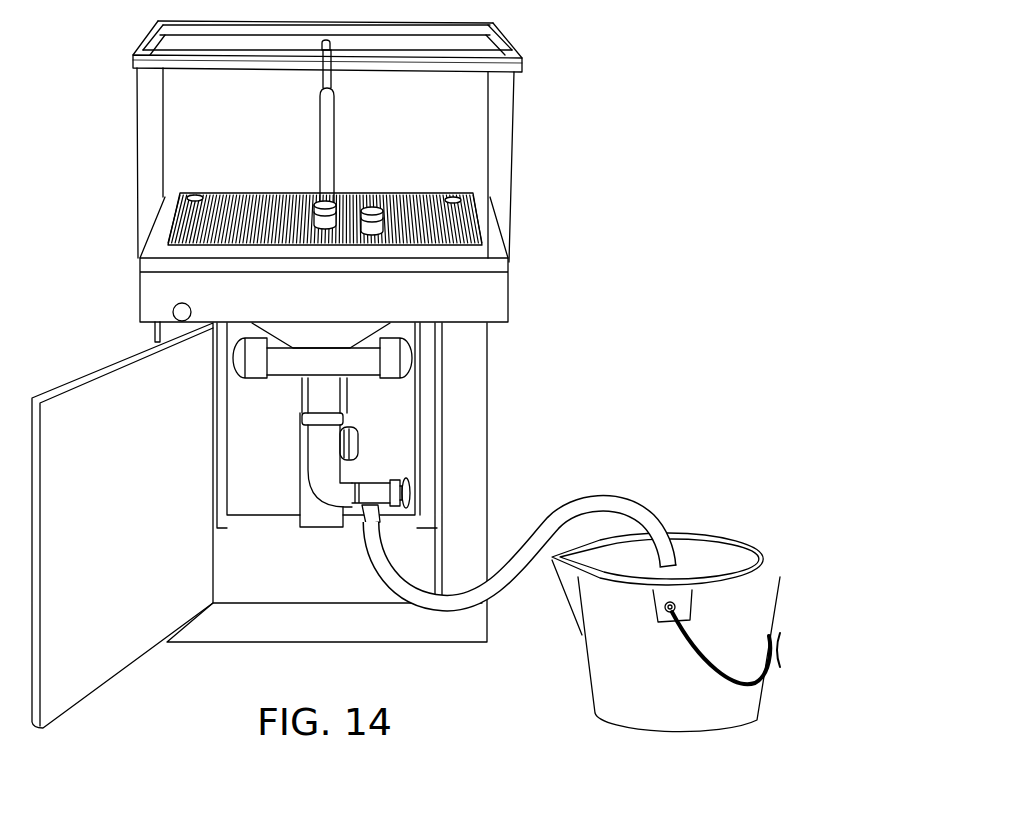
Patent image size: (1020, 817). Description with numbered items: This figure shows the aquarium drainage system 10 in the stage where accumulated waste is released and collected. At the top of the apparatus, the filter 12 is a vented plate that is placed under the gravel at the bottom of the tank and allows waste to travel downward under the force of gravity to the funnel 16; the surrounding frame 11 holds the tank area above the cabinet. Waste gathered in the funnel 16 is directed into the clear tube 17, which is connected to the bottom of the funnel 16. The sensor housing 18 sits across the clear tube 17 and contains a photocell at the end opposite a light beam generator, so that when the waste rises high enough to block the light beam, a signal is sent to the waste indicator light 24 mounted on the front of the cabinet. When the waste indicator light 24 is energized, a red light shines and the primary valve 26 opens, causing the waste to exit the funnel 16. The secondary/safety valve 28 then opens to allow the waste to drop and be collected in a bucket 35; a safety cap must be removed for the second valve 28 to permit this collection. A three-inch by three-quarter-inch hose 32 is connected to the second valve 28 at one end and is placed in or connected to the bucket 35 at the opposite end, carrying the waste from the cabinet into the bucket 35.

The aquarium drainage system 10 is at (584, 77).
The frame 11 is at (512, 132).
The filter 12 is at (478, 222).
The funnel 16 is at (392, 328).
The clear tube 17 is at (310, 410).
The sensor housing 18 is at (410, 372).
The waste indicator light 24 is at (173, 311).
The primary valve 26 is at (360, 463).
The secondary/safety valve 28 is at (410, 490).
The hose 32 is at (625, 520).
The bucket 35 is at (735, 617).